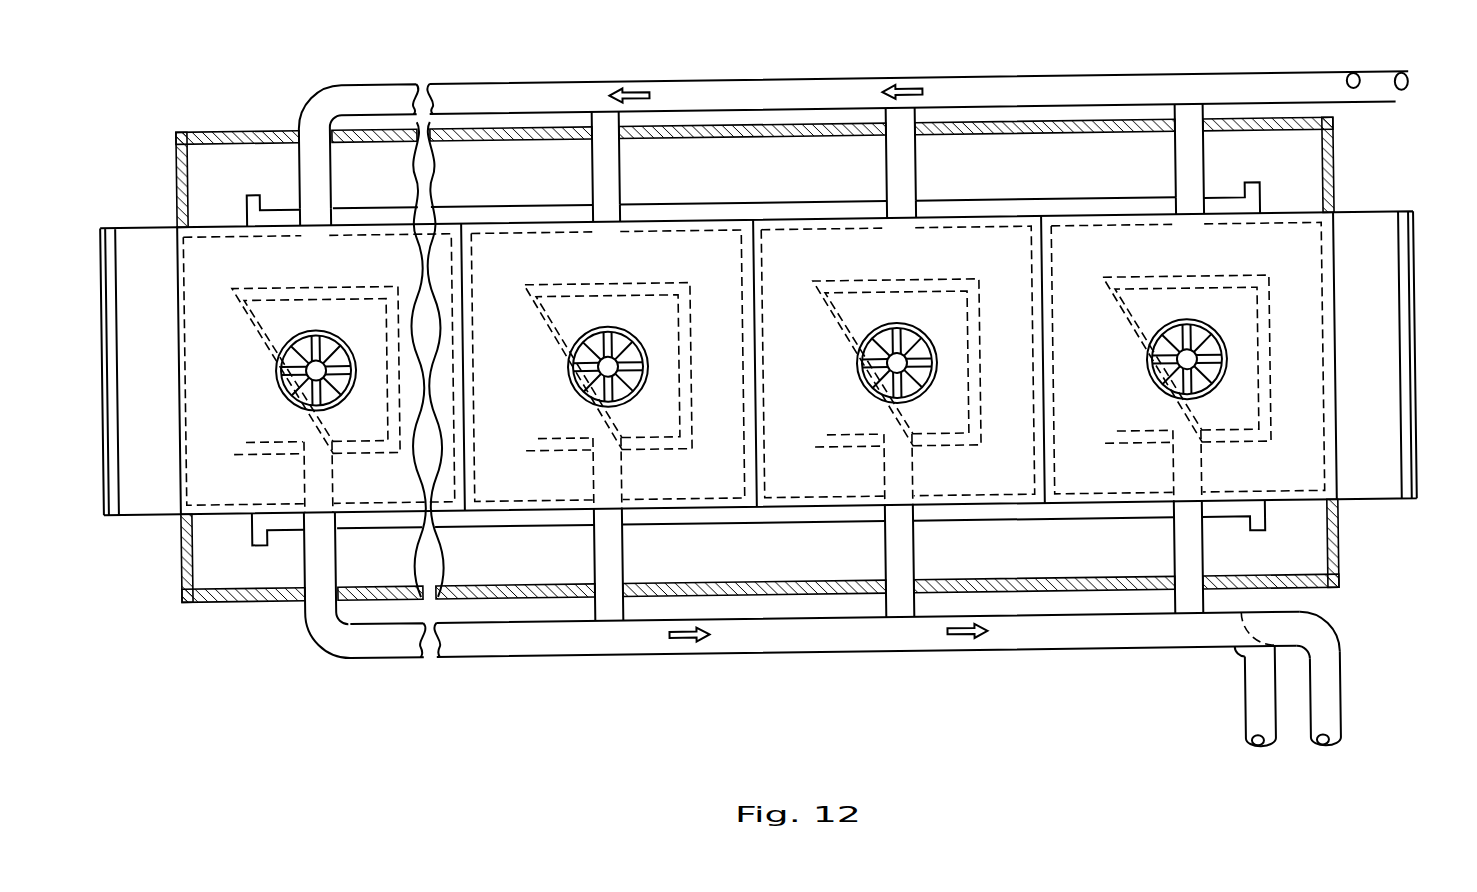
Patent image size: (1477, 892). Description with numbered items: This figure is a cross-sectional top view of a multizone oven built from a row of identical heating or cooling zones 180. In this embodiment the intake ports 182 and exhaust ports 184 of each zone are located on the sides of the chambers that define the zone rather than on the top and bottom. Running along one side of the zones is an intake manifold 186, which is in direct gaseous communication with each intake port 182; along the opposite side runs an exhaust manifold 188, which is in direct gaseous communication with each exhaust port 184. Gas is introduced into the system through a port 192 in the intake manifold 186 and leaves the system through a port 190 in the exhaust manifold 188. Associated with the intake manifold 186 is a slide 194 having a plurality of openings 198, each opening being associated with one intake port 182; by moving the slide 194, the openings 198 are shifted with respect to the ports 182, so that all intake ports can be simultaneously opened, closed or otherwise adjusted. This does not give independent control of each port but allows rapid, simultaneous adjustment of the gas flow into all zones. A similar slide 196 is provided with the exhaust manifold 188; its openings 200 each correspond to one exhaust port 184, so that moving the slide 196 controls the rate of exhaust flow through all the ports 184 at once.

The heating or cooling zone 180 is at (212, 249).
The intake port 182 is at (307, 232).
The exhaust port 184 is at (314, 426).
The intake manifold 186 is at (962, 79).
The exhaust manifold 188 is at (302, 571).
The port 190 is at (1252, 757).
The port 192 is at (1364, 84).
The slide 194 is at (346, 203).
The slide 196 is at (396, 523).
The opening 198 is at (325, 222).
The opening 200 is at (316, 509).